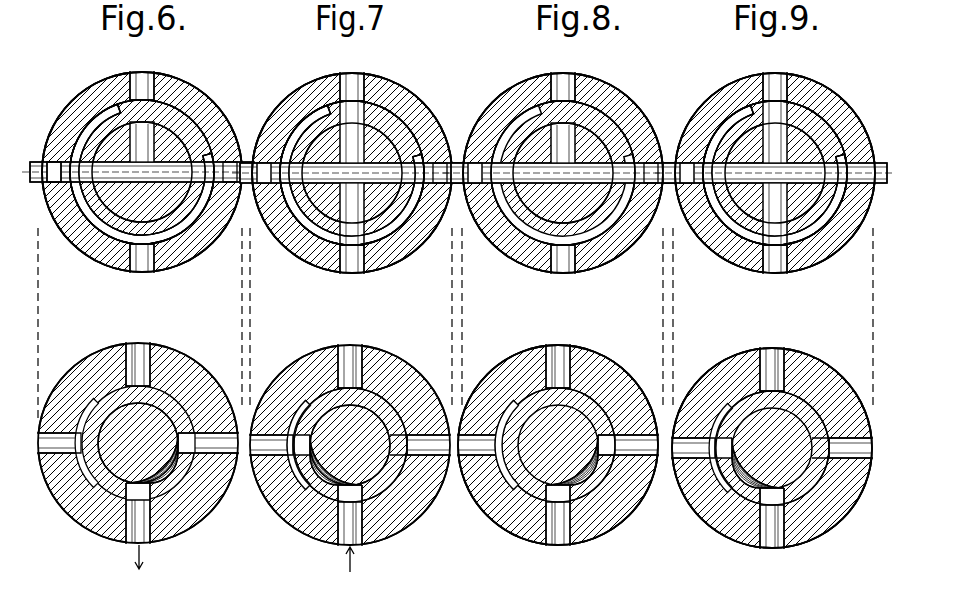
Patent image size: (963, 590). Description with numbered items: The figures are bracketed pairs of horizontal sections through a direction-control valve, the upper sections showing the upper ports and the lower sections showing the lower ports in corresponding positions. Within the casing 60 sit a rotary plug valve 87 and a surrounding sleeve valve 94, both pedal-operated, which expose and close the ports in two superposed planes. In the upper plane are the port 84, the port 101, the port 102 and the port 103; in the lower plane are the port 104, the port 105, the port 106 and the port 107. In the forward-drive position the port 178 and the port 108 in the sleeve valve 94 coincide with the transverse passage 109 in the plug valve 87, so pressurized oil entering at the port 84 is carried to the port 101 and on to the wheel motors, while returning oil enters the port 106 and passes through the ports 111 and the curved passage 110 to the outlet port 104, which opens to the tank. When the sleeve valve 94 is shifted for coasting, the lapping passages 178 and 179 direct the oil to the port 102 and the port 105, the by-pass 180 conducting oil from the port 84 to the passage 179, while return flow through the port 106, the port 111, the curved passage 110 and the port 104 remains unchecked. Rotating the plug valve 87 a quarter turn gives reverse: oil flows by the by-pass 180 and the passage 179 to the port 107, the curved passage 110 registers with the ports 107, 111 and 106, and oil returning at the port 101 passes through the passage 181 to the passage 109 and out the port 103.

In FIG. 6, the casing 60 is at (107, 84).
In FIG. 7, the casing 60 is at (407, 248).
In FIG. 8, the casing 60 is at (508, 240).
In FIG. 9, the casing 60 is at (850, 129).
In FIG. 6, the port 84 is at (40, 182).
In FIG. 7, the port 84 is at (452, 185).
In FIG. 8, the port 84 is at (661, 185).
In FIG. 6, the plug valve 87 is at (198, 245).
In FIG. 7, the plug valve 87 is at (302, 231).
In FIG. 8, the plug valve 87 is at (602, 130).
In FIG. 9, the plug valve 87 is at (738, 188).
In FIG. 6, the sleeve valve 94 is at (173, 112).
In FIG. 7, the sleeve valve 94 is at (398, 122).
In FIG. 8, the sleeve valve 94 is at (635, 128).
In FIG. 9, the sleeve valve 94 is at (737, 228).
In FIG. 6, the port 101 is at (234, 160).
In FIG. 7, the port 101 is at (446, 162).
In FIG. 8, the port 101 is at (660, 162).
In FIG. 9, the port 101 is at (867, 188).
In FIG. 6, the port 102 is at (151, 80).
In FIG. 7, the port 102 is at (351, 80).
In FIG. 8, the port 102 is at (562, 95).
In FIG. 9, the port 102 is at (775, 77).
In FIG. 6, the port 103 is at (152, 273).
In FIG. 7, the port 103 is at (341, 273).
In FIG. 8, the port 103 is at (572, 273).
In FIG. 9, the port 103 is at (779, 274).
In FIG. 6, the outlet port 104 is at (228, 470).
In FIG. 7, the outlet port 104 is at (447, 470).
In FIG. 8, the outlet port 104 is at (658, 433).
In FIG. 9, the outlet port 104 is at (861, 446).
In FIG. 6, the port 105 is at (141, 348).
In FIG. 7, the port 105 is at (340, 344).
In FIG. 8, the port 105 is at (561, 350).
In FIG. 9, the port 105 is at (776, 351).
In FIG. 6, the port 106 is at (144, 542).
In FIG. 7, the port 106 is at (353, 545).
In FIG. 8, the port 106 is at (559, 522).
In FIG. 9, the port 106 is at (771, 544).
In FIG. 6, the port 107 is at (70, 470).
In FIG. 7, the port 107 is at (303, 477).
In FIG. 8, the port 107 is at (538, 397).
In FIG. 9, the port 107 is at (722, 428).
In FIG. 6, the port 108 is at (201, 160).
In FIG. 9, the port 108 is at (833, 218).
In FIG. 6, the transverse passage 109 is at (92, 150).
In FIG. 7, the transverse passage 109 is at (322, 82).
In FIG. 9, the transverse passage 109 is at (732, 97).
In FIG. 6, the curved passage 110 is at (115, 498).
In FIG. 7, the curved passage 110 is at (327, 491).
In FIG. 8, the curved passage 110 is at (668, 508).
In FIG. 9, the curved passage 110 is at (752, 459).
In FIG. 6, the ports 111 is at (182, 415).
In FIG. 7, the ports 111 is at (402, 434).
In FIG. 8, the ports 111 is at (635, 478).
In FIG. 9, the ports 111 is at (834, 504).
In FIG. 6, the port 178 is at (80, 212).
In FIG. 7, the port 178 is at (288, 118).
In FIG. 8, the port 178 is at (525, 110).
In FIG. 9, the port 178 is at (710, 113).
In FIG. 7, the passage 179 is at (302, 398).
In FIG. 9, the passage 179 is at (738, 392).
In FIG. 7, the by-pass 180 is at (459, 133).
In FIG. 8, the by-pass 180 is at (668, 500).
In FIG. 7, the passage 181 is at (374, 117).
In FIG. 9, the passage 181 is at (805, 170).